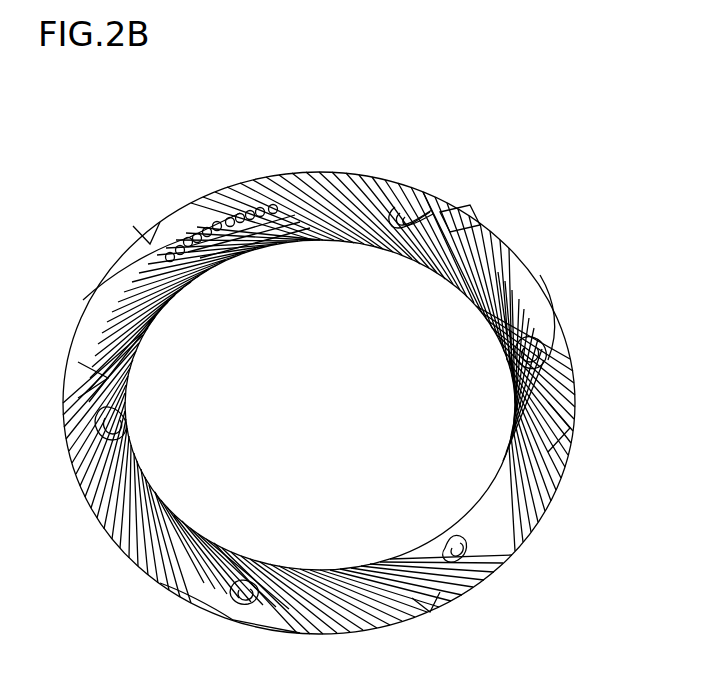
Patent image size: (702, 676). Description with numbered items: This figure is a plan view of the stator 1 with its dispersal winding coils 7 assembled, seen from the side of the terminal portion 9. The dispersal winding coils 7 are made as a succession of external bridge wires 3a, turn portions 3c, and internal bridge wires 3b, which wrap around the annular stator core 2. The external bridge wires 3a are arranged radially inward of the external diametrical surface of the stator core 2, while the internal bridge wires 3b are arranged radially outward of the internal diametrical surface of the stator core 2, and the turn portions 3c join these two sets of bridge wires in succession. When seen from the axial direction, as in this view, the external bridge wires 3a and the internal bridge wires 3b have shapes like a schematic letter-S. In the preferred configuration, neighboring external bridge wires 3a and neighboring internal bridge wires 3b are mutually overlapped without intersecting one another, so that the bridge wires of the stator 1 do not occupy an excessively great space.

The stator 1 is at (144, 137).
The stator core 2 is at (200, 597).
The external bridge wires 3a is at (345, 185).
The internal bridge wires 3b is at (483, 255).
The turn portions 3c is at (407, 198).
The dispersal winding coils 7 is at (530, 318).
The terminal portion 9 is at (265, 200).